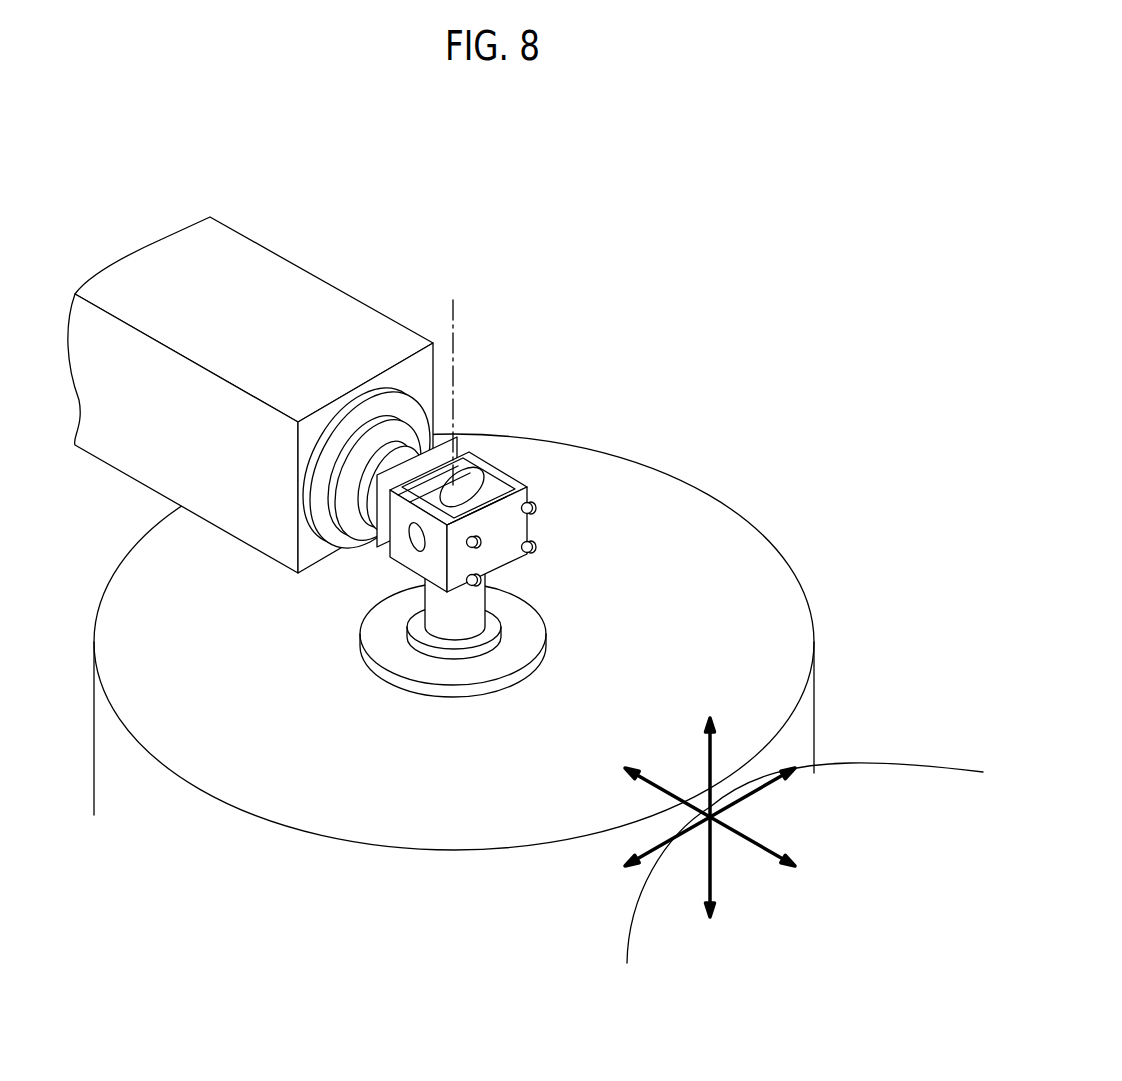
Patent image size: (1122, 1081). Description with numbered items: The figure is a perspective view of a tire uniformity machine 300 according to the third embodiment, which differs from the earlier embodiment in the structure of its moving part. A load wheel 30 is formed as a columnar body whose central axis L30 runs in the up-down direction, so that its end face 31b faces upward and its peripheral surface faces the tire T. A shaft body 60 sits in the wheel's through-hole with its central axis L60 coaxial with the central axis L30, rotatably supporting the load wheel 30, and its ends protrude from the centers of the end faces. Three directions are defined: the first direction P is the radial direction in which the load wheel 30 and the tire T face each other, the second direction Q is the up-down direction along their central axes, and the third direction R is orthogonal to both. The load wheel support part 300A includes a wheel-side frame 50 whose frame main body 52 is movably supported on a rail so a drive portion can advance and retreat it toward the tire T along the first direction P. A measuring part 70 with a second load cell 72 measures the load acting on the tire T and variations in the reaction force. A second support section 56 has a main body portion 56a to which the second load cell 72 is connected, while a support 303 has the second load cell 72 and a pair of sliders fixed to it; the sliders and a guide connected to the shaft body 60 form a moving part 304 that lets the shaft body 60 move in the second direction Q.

The tire uniformity machine 300 is at (787, 342).
The load wheel support part 300A is at (158, 221).
The load wheel 30 is at (779, 529).
The end face 31b is at (693, 548).
The wheel-side frame 50 is at (232, 240).
The frame main body 52 is at (252, 252).
The second support section 56 is at (290, 275).
The main body portion 56a is at (307, 292).
The measuring part 70 is at (366, 442).
The second load cell 72 is at (377, 432).
The shaft body 60 is at (475, 617).
The support 303 is at (513, 525).
The moving part 304 is at (467, 490).
The central axis of the wheel body L30 is at (453, 321).
The central axis of the shaft body L60 is at (530, 361).
The third direction R is at (768, 783).
The tire T is at (878, 767).
The first direction P is at (750, 838).
The second direction Q is at (713, 880).